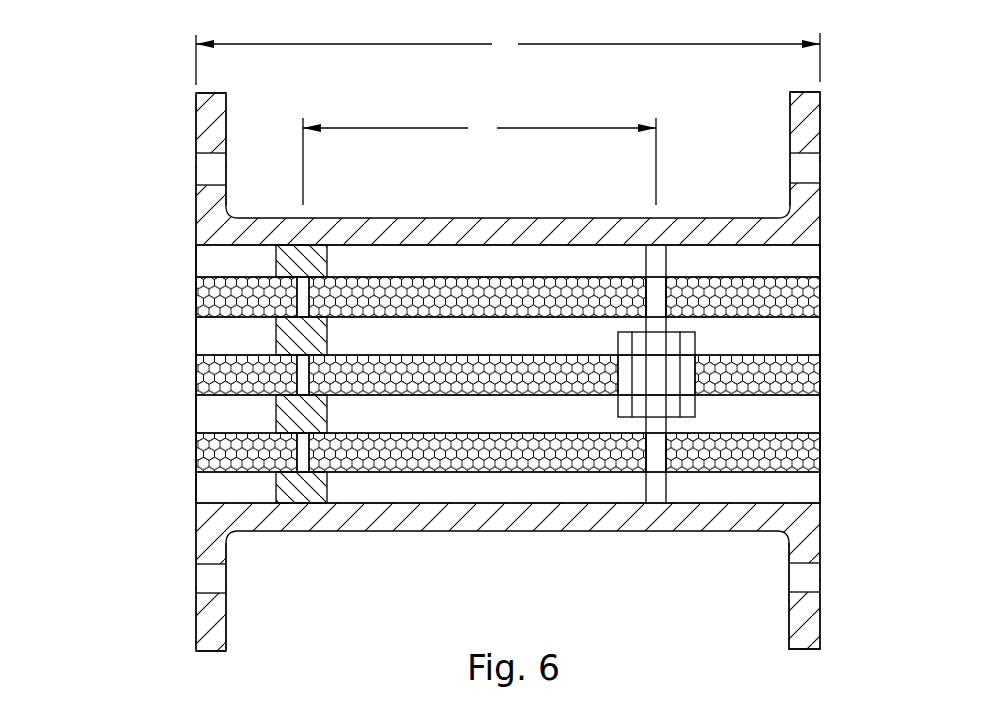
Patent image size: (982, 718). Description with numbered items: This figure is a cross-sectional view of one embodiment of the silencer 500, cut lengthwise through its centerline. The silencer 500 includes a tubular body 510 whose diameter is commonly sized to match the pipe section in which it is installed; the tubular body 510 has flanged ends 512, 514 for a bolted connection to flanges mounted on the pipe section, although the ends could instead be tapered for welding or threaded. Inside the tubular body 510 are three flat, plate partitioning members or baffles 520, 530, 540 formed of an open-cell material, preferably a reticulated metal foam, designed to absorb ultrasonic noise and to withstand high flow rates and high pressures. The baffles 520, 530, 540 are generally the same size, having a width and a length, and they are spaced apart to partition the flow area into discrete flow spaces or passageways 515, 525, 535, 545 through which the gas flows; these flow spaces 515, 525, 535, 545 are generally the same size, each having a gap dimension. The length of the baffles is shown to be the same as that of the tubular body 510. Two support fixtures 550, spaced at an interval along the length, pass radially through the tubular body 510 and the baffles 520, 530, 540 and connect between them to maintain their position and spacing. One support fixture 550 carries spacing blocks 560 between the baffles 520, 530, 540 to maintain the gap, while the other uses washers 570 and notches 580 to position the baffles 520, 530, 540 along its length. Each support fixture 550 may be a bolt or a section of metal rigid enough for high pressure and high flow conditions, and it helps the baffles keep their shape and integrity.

The silencer 500 is at (143, 114).
The tubular body 510 is at (452, 517).
The flanged end 512 is at (210, 122).
The flanged end 514 is at (803, 117).
The flow space 515 is at (205, 490).
The baffle 520 is at (818, 447).
The flow space 525 is at (203, 410).
The baffle 530 is at (818, 368).
The flow space 535 is at (208, 335).
The baffle 540 is at (818, 288).
The flow space 545 is at (202, 260).
The support fixture 550 is at (303, 292).
The spacing block 560 is at (320, 337).
The washer 570 is at (625, 408).
The notch 580 is at (663, 293).